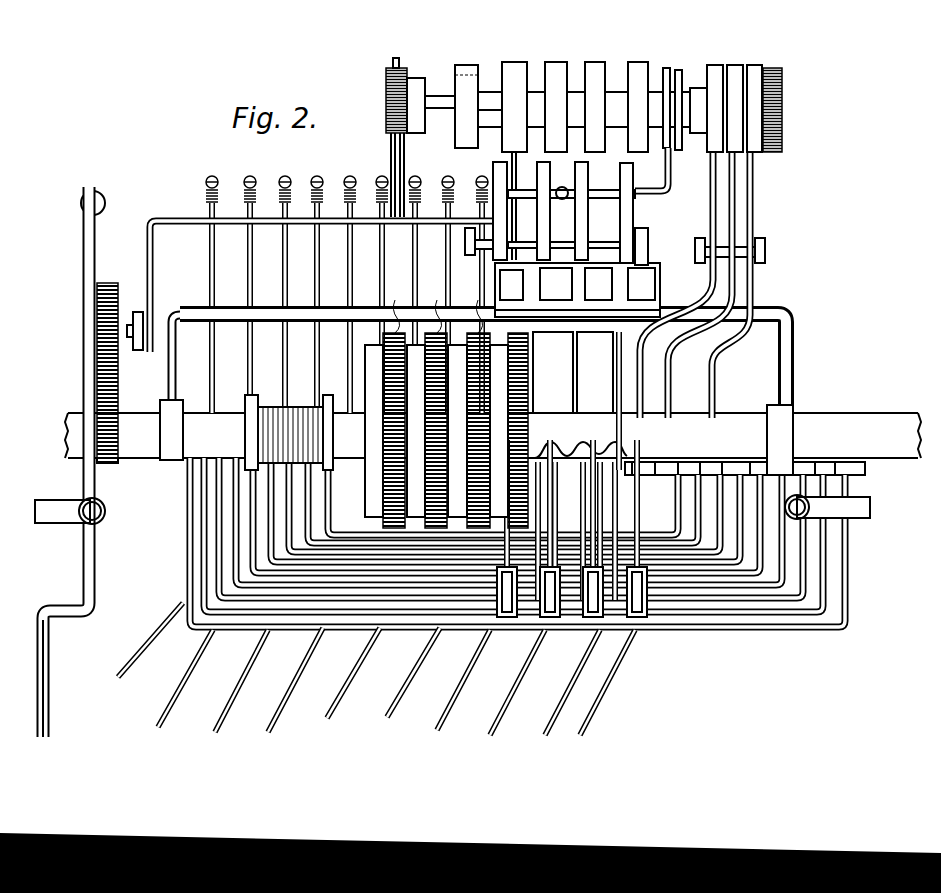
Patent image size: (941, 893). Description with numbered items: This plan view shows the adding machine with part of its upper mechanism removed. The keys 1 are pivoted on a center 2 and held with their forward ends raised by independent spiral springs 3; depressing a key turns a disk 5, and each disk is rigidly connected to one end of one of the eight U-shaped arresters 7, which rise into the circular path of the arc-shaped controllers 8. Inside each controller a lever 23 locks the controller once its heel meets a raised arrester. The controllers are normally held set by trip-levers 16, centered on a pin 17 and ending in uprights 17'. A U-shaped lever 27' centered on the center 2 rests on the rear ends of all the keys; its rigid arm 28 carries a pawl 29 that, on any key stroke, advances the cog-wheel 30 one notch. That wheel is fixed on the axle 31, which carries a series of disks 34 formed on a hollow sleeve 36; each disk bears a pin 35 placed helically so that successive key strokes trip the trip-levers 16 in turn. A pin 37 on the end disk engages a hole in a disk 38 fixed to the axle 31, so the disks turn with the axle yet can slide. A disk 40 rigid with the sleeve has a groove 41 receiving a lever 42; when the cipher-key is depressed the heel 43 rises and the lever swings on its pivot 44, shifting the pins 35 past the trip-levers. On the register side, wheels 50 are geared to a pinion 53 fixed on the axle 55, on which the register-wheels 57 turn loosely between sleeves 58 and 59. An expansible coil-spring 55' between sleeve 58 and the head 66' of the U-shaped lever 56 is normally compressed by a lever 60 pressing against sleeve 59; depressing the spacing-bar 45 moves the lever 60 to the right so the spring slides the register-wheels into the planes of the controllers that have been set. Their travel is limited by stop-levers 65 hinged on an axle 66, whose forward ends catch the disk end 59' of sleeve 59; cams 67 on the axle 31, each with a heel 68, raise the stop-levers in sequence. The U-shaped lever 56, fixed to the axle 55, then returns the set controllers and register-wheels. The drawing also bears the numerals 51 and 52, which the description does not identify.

The keys 1 is at (622, 693).
The center 2 is at (134, 310).
The spiral springs 3 is at (347, 294).
The disk 5 is at (864, 472).
The arresters 7 is at (812, 597).
The controllers 8 is at (502, 306).
The trip-levers 16 is at (506, 172).
The pin 17 is at (512, 249).
The uprights 17' is at (660, 241).
The lever 23 is at (632, 625).
The U-shaped lever 27' is at (321, 286).
The arm 28 is at (404, 150).
The pawl 29 is at (388, 148).
The cog-wheel 30 is at (386, 102).
The axle 31 is at (441, 106).
The disks 34 is at (552, 64).
The pin 35 is at (492, 156).
The hollow axle or sleeve 36 is at (592, 109).
The pin 37 is at (492, 66).
The disk 38 is at (456, 128).
The disk 40 is at (722, 56).
The groove 41 is at (670, 68).
The lever 42 is at (670, 182).
The heel 43 is at (635, 202).
The pivot 44 is at (568, 205).
The spacing-bar 45 is at (48, 686).
The wheels 50 is at (94, 350).
The ring 51 is at (106, 513).
The cylinder 52 is at (43, 518).
The pinion 53 is at (106, 464).
The axle 55 is at (493, 435).
The expansible coil-spring 55' is at (289, 425).
The U-shaped lever 56 is at (164, 384).
The register-wheels 57 is at (536, 384).
The sleeve 58 is at (349, 435).
The sleeve 59 is at (577, 423).
The disk end 59' is at (695, 435).
The lever 60 is at (726, 468).
The stop-levers 65 is at (761, 205).
The axle 66 is at (486, 321).
The head 66' is at (212, 435).
The cams 67 is at (760, 64).
The heel 68 is at (577, 464).